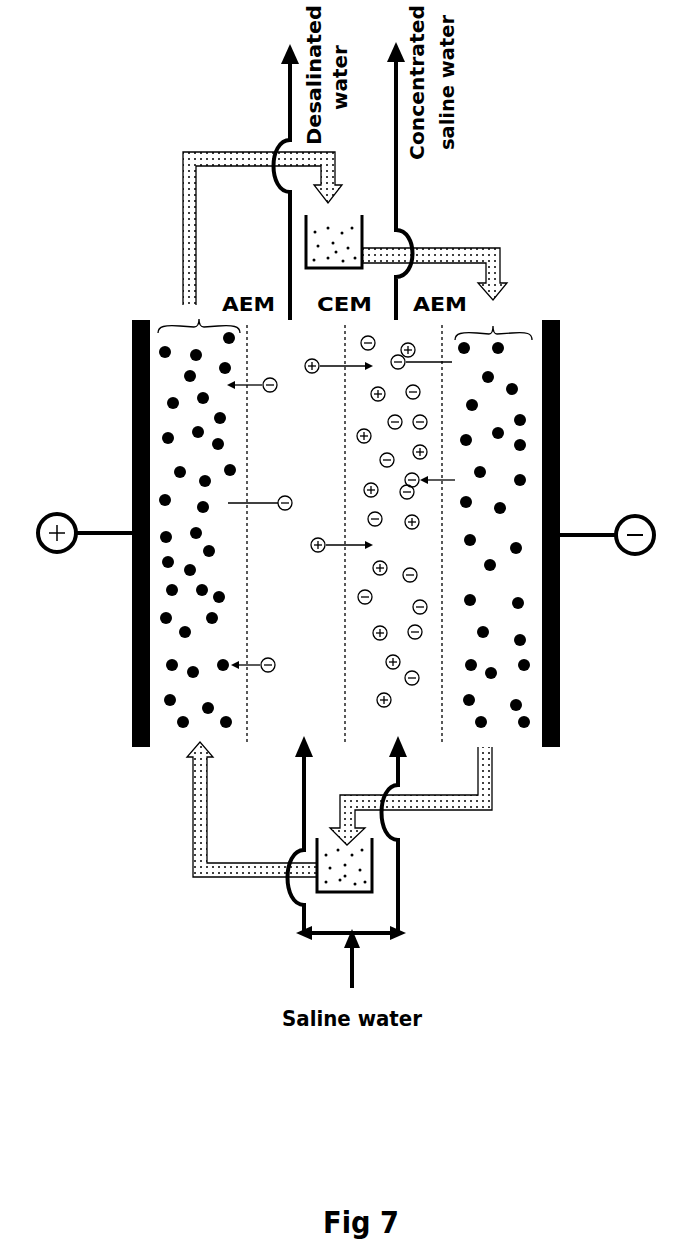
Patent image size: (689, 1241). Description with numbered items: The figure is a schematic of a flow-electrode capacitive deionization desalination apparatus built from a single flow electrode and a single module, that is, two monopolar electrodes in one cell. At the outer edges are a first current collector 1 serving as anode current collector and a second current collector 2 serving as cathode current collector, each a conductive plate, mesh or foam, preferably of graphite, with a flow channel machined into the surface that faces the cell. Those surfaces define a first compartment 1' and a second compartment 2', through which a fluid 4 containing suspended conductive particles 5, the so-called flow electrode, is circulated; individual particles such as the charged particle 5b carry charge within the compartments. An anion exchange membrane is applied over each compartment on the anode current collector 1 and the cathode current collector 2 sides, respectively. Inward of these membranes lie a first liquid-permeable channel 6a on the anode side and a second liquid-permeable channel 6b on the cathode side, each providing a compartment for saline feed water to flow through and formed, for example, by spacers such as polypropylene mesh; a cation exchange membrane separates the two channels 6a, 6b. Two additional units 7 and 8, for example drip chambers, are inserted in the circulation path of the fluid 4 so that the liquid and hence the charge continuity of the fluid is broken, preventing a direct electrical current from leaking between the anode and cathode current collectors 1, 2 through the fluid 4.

The first current collector 1 is at (121, 513).
The first compartment 1' is at (172, 475).
The second current collector 2 is at (571, 511).
The second compartment 2' is at (527, 467).
The fluid 4 is at (183, 213).
The suspended conductive particles 5 is at (524, 704).
The charged electrolyte particle 5b is at (528, 478).
The first liquid-permeable channel 6a is at (297, 712).
The second liquid-permeable channel 6b is at (415, 723).
The additional unit 7 is at (348, 882).
The additional unit 8 is at (342, 228).